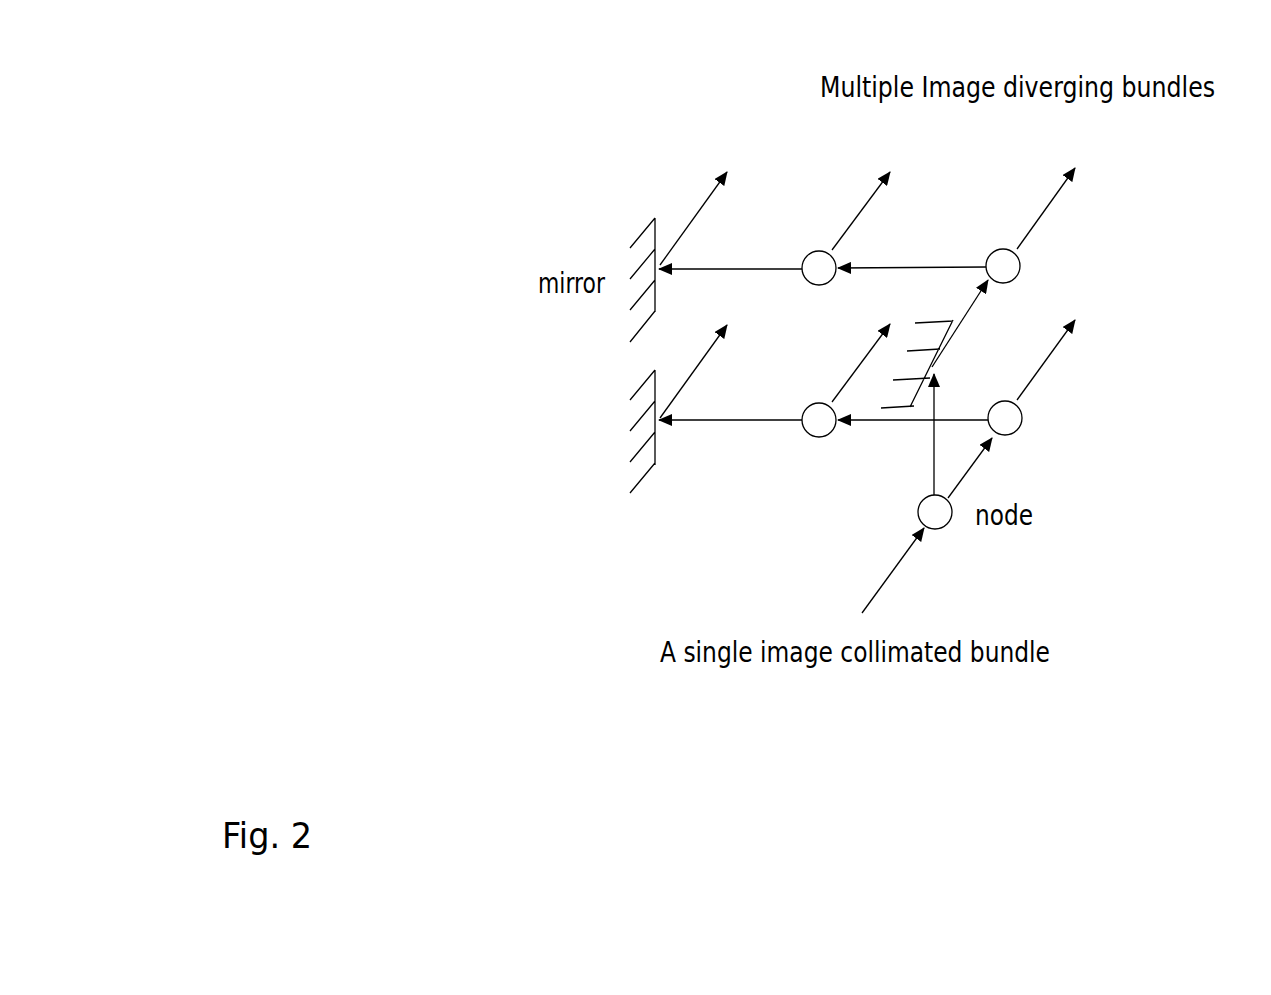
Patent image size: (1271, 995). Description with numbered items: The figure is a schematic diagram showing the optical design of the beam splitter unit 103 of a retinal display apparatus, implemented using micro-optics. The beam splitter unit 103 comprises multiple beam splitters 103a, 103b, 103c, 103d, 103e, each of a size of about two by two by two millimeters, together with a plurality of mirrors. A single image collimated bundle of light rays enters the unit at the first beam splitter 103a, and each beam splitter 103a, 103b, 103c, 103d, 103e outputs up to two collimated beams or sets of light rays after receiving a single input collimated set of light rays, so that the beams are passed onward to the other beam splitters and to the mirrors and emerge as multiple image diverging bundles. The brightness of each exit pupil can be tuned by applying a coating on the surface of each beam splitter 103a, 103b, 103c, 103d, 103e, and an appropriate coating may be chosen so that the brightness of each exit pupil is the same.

The beam splitter unit 103 is at (468, 100).
The beam splitter 103a is at (953, 522).
The beam splitter 103b is at (1023, 418).
The beam splitter 103c is at (813, 403).
The beam splitter 103d is at (1020, 267).
The beam splitter 103e is at (818, 251).